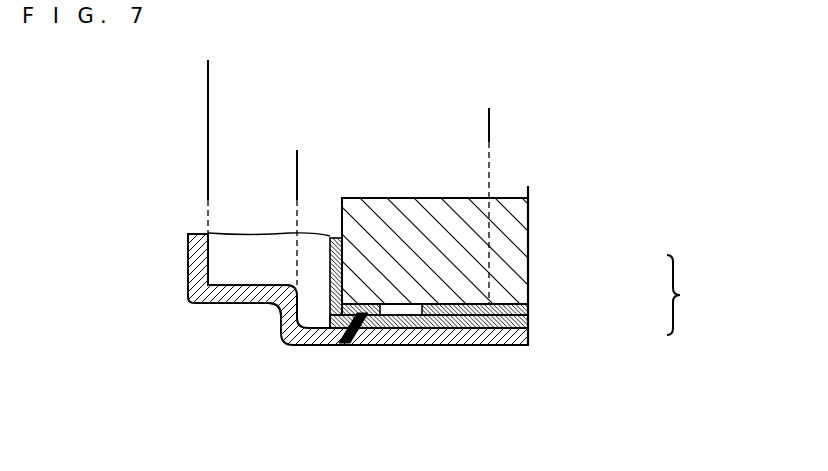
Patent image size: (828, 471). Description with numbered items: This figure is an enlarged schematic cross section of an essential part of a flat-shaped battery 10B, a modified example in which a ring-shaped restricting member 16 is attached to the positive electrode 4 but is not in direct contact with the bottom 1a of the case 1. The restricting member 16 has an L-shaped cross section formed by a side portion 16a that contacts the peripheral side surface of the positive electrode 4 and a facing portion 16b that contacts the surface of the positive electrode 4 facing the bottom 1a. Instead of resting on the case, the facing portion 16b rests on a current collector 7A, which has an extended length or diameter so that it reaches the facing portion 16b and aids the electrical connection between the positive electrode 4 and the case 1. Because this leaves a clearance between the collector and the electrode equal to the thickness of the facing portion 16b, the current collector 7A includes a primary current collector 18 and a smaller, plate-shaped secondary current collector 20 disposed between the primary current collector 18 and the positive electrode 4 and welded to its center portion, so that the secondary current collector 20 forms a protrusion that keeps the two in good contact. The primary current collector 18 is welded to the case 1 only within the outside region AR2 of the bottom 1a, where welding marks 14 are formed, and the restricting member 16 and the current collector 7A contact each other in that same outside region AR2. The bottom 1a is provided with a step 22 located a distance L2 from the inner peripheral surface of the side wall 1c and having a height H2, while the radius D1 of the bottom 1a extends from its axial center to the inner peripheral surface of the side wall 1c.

The case 1 is at (197, 232).
The bottom 1a is at (437, 346).
The side wall 1c is at (187, 234).
The positive electrode 4 is at (458, 197).
The welding marks 14 is at (342, 346).
The restricting member 16 is at (324, 327).
The side portion 16a is at (330, 238).
The facing portion 16b is at (363, 346).
The primary current collector 18 is at (528, 322).
The secondary current collector 20 is at (528, 307).
The step 22 is at (254, 322).
The current collector 7A is at (691, 295).
The battery 10B is at (692, 161).
The radius D1 is at (209, 70).
The outside region AR2 is at (488, 118).
The distance L2 is at (296, 162).
The height H2 is at (318, 328).